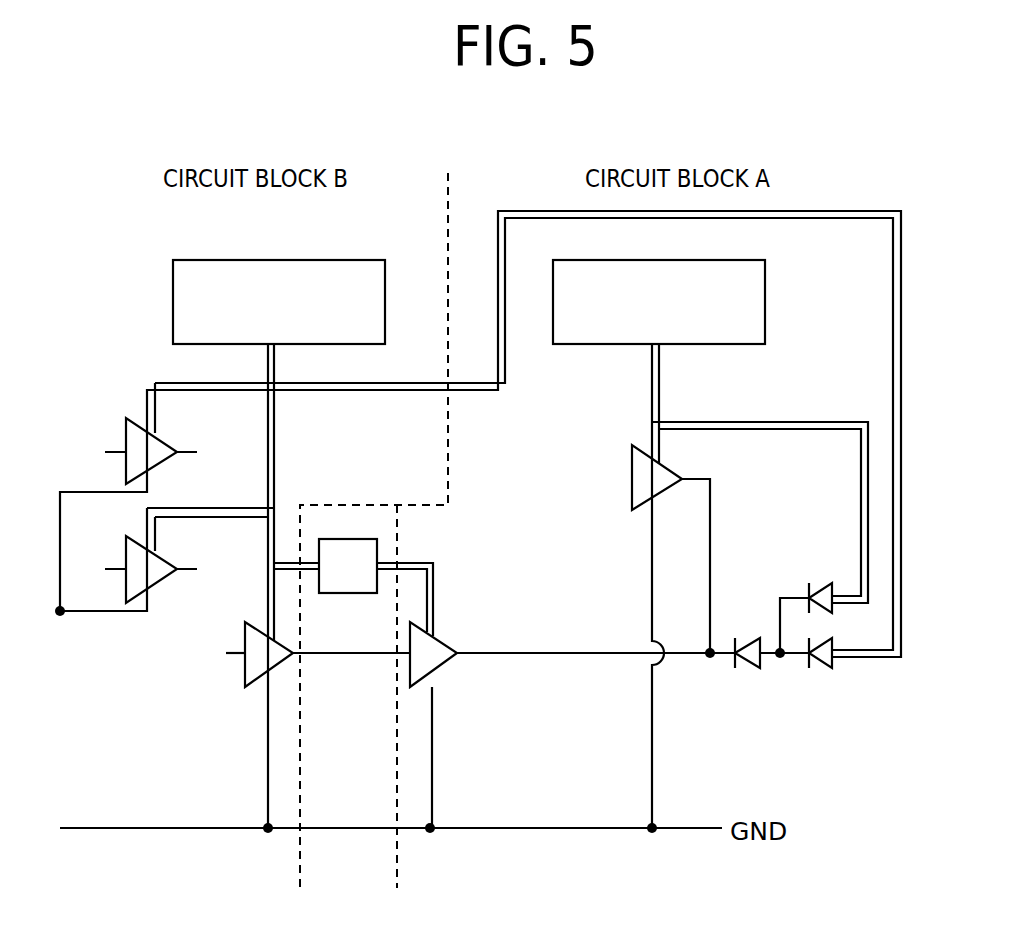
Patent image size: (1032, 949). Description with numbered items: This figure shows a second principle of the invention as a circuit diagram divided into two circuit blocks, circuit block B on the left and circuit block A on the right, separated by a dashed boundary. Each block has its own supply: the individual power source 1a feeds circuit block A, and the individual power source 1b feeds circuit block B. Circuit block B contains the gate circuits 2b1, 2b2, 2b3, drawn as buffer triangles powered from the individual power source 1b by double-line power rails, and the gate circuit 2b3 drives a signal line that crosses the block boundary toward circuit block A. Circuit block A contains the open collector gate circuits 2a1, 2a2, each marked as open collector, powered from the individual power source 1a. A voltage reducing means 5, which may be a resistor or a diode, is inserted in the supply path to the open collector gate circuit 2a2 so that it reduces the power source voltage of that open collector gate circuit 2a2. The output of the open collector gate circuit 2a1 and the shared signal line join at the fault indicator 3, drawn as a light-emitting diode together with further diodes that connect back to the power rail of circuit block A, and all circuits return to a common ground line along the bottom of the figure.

The individual power source 1a is at (766, 303).
The individual power source 1b is at (363, 258).
The open collector gate circuit 2a1 is at (675, 472).
The open collector gate circuit 2a2 is at (442, 641).
The gate circuit 2b1 is at (167, 441).
The gate circuit 2b2 is at (167, 560).
The gate circuit 2b3 is at (248, 622).
The fault indicator 3 is at (746, 668).
The voltage reducing means 5 is at (334, 594).